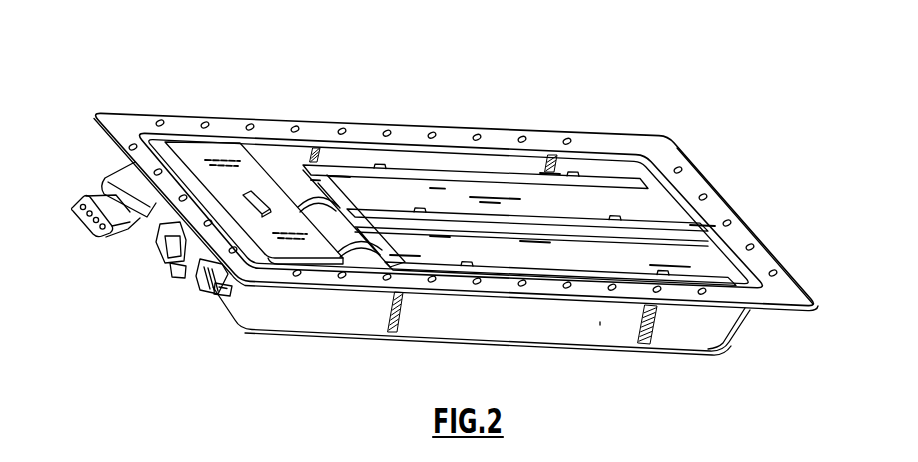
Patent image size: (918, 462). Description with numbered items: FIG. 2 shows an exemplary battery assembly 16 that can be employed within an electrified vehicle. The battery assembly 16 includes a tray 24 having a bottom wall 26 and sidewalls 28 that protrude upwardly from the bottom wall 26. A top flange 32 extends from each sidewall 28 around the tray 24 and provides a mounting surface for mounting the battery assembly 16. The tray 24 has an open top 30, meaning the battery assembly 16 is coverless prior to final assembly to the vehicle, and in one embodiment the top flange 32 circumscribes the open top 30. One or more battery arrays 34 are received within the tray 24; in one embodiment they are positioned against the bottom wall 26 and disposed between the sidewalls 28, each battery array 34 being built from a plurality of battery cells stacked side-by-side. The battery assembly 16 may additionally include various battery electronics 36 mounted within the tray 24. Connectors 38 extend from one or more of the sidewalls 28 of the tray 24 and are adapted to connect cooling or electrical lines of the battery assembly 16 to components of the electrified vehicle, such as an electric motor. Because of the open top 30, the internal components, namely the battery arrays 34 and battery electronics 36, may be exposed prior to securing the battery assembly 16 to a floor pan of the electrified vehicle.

The battery assembly 16 is at (327, 74).
The tray 24 is at (334, 322).
The bottom wall 26 is at (527, 345).
The sidewalls 28 is at (222, 286).
The open top 30 is at (665, 160).
The top flange 32 is at (449, 288).
The battery arrays 34 is at (618, 253).
The battery electronics 36 is at (160, 265).
The connectors 38 is at (113, 185).